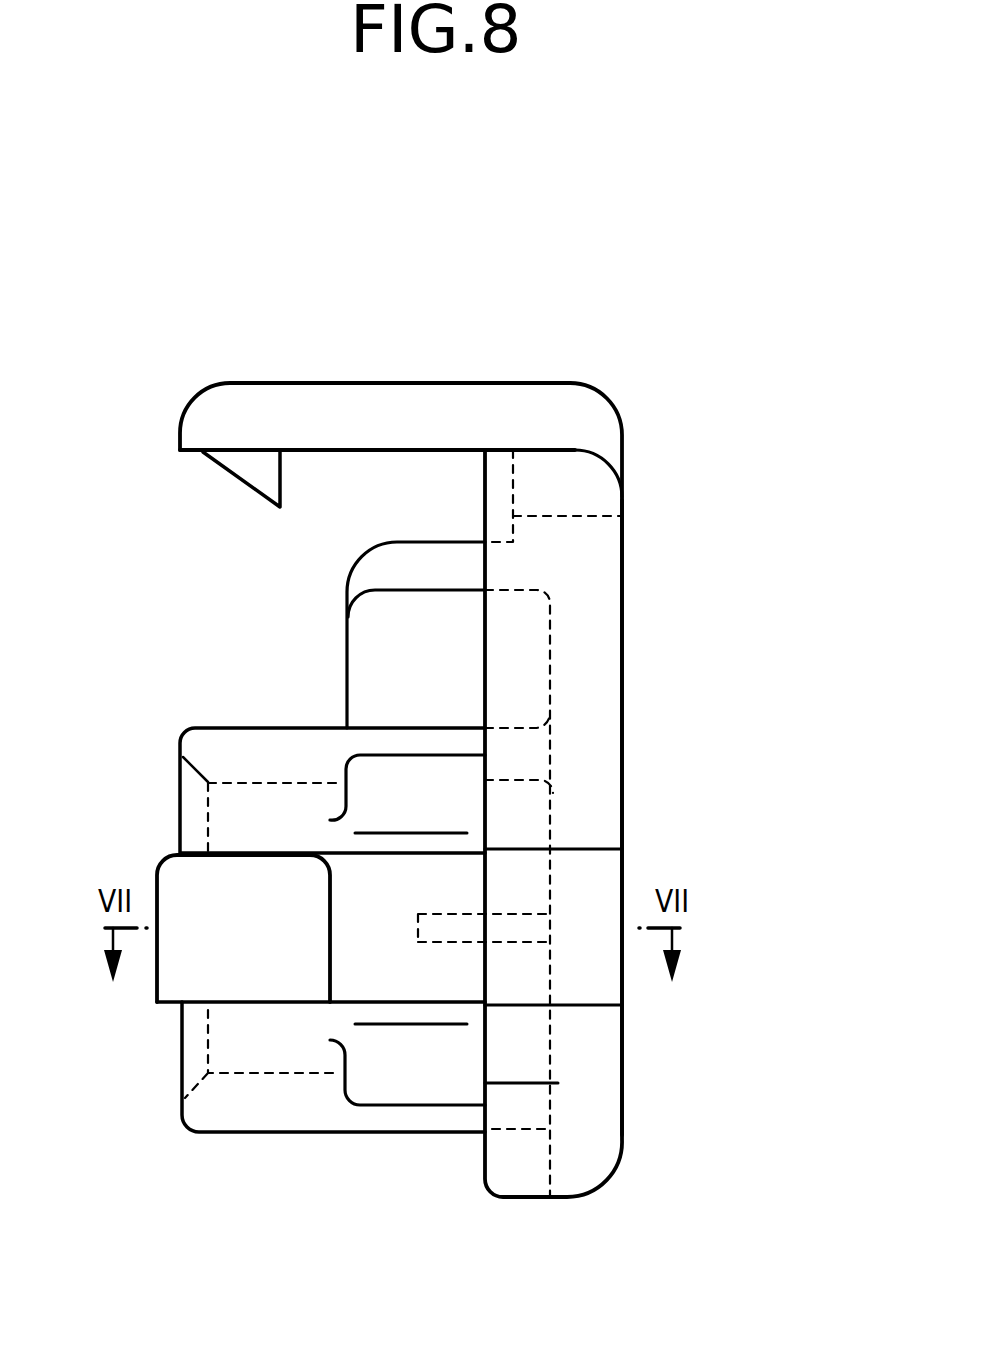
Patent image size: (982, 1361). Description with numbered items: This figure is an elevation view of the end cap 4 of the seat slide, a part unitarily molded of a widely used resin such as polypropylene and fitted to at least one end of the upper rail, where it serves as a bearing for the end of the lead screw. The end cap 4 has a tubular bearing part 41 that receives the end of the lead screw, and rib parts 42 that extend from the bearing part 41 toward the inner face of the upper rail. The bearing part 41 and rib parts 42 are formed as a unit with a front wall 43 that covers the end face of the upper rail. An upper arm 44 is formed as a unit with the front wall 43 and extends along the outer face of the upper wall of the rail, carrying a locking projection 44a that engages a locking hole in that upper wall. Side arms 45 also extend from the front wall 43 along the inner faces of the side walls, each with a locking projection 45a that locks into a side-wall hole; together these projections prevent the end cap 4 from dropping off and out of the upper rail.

The end cap 4 is at (623, 447).
The tubular bearing part 41 is at (233, 742).
The rib parts 42 is at (440, 590).
The front wall 43 is at (622, 595).
The upper arm 44 is at (294, 383).
The locking projection 44a is at (260, 487).
The side arms 45 is at (393, 987).
The locking projection 45a is at (273, 983).